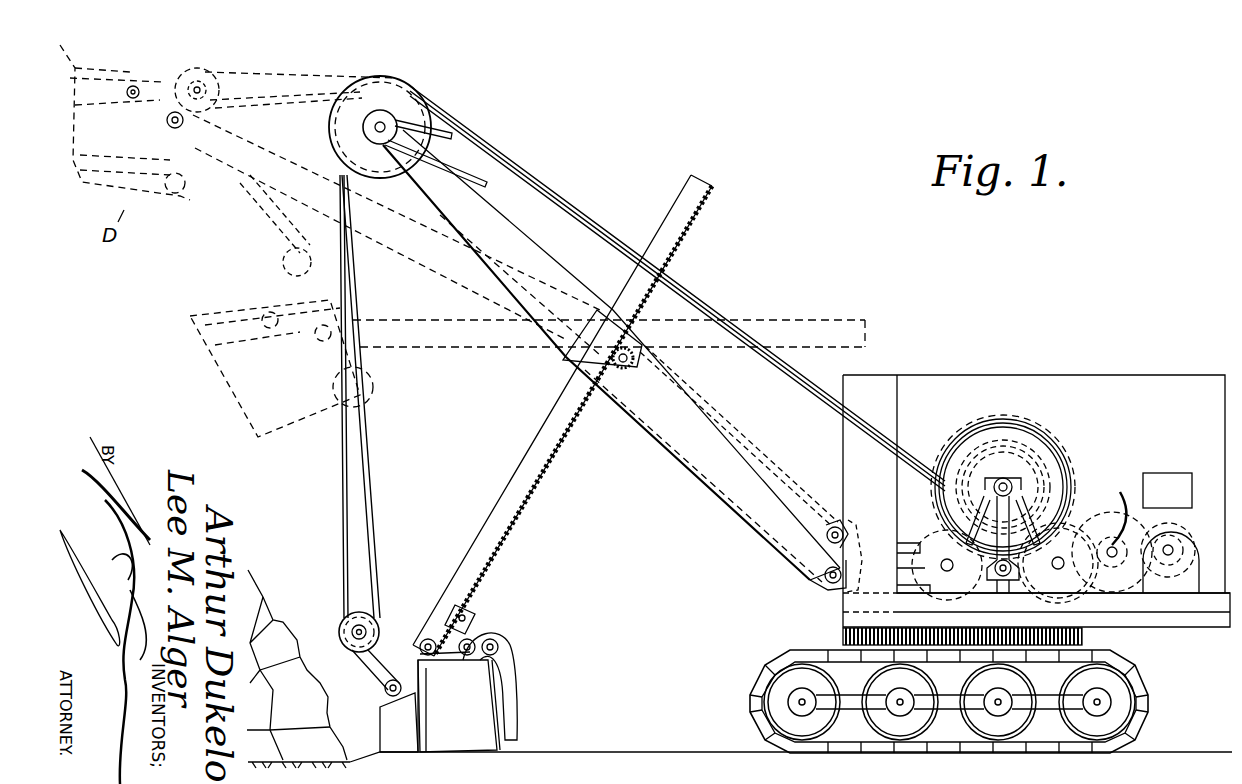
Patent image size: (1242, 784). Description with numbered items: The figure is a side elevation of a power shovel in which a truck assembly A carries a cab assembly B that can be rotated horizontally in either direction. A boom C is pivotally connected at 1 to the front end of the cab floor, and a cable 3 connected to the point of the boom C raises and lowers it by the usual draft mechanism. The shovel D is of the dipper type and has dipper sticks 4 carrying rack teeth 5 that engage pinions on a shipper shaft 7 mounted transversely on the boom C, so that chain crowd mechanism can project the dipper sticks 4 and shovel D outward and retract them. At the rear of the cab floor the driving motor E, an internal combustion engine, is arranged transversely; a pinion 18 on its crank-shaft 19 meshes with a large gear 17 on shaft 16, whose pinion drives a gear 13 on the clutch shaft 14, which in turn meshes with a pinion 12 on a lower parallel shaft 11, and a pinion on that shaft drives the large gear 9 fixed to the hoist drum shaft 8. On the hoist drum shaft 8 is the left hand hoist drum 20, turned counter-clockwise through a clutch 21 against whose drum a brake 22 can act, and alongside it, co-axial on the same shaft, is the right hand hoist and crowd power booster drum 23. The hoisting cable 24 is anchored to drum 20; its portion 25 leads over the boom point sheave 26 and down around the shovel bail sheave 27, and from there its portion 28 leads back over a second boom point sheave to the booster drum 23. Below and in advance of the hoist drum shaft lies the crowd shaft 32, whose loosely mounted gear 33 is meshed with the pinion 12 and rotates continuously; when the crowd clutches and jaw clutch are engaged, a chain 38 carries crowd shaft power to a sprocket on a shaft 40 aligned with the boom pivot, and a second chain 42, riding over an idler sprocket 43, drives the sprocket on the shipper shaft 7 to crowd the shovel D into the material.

The boom pivot connection 1 is at (824, 580).
The cable 3 is at (467, 171).
The dipper sticks 4 is at (516, 468).
The rack teeth 5 is at (532, 480).
The shipper shaft 7 is at (624, 372).
The hoist drum shaft 8 is at (1006, 484).
The large gear 9 is at (1022, 425).
The lower parallel shaft 11 is at (995, 569).
The pinion 12 is at (1063, 603).
The gear 13 is at (1058, 563).
The shaft 14 is at (1058, 563).
The parallel shaft 16 is at (1114, 556).
The large gear 17 is at (1112, 513).
The pinion 18 is at (1176, 548).
The crank-shaft 19 is at (1172, 556).
The hoist drum 20 is at (1062, 458).
The clutch 21 is at (960, 442).
The brake 22 is at (968, 432).
The hoist and crowd power booster drum 23 is at (1070, 476).
The hoisting cable 24 is at (590, 212).
The portion of hoist cable 25 is at (372, 521).
The boom point sheave 26 is at (346, 122).
The shovel bail sheave 27 is at (212, 75).
The portion of hoist cable 28 is at (342, 521).
The crowd shaft 32 is at (947, 565).
The gear 33 is at (915, 570).
The chain 38 is at (906, 543).
The shaft 40 is at (838, 597).
The chain 42 is at (786, 466).
The idler sprocket 43 is at (832, 522).
The truck assembly A is at (753, 659).
The cab assembly B is at (897, 375).
The boom C is at (682, 428).
The shovel D is at (475, 700).
The driving motor E is at (1172, 476).